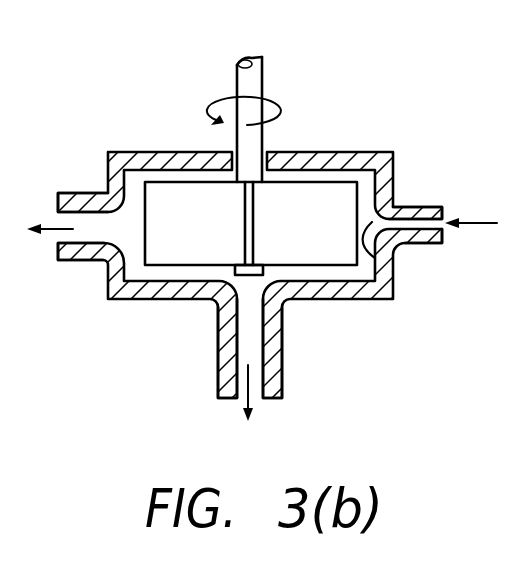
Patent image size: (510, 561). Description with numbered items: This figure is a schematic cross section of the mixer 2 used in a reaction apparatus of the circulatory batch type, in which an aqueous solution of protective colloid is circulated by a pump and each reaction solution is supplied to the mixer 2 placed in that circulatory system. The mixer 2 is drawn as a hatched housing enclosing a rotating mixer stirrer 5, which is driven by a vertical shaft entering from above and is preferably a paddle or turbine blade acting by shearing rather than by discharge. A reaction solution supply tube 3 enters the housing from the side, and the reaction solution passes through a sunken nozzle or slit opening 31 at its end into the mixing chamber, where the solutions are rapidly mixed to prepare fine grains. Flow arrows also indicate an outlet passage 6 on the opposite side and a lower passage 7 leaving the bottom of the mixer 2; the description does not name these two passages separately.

The mixer 2 is at (155, 152).
The reaction solution supply tube 3 is at (418, 206).
The sunken nozzle or slit opening 31 is at (373, 254).
The mixer stirrer 5 is at (302, 207).
The outlet pipe 6 is at (75, 262).
The drain pipe 7 is at (283, 334).